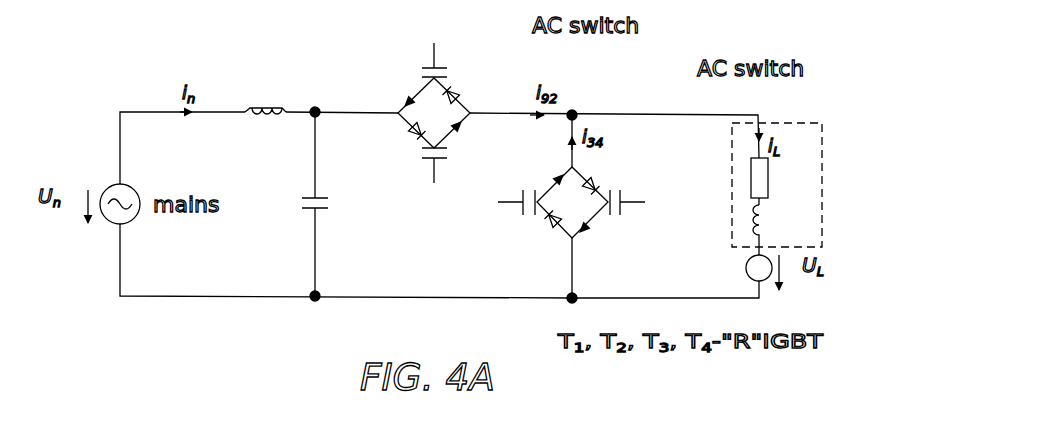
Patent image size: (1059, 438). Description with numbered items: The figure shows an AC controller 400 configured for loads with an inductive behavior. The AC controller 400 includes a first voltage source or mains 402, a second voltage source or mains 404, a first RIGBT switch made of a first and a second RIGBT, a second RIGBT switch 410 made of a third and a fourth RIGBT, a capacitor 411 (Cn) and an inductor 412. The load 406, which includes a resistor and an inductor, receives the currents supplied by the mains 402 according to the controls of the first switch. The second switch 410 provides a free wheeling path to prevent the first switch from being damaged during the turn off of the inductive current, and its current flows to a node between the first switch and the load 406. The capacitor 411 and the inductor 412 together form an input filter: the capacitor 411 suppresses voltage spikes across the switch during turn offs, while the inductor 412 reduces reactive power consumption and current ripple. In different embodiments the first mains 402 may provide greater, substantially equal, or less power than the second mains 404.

The AC controller 400 is at (466, 75).
The first voltage source or mains 402 is at (110, 183).
The second voltage source or mains 404 is at (765, 279).
The load 406 is at (803, 123).
The second RIGBT switch 410 is at (614, 172).
The capacitor 411 is at (307, 197).
The inductor 412 is at (287, 108).